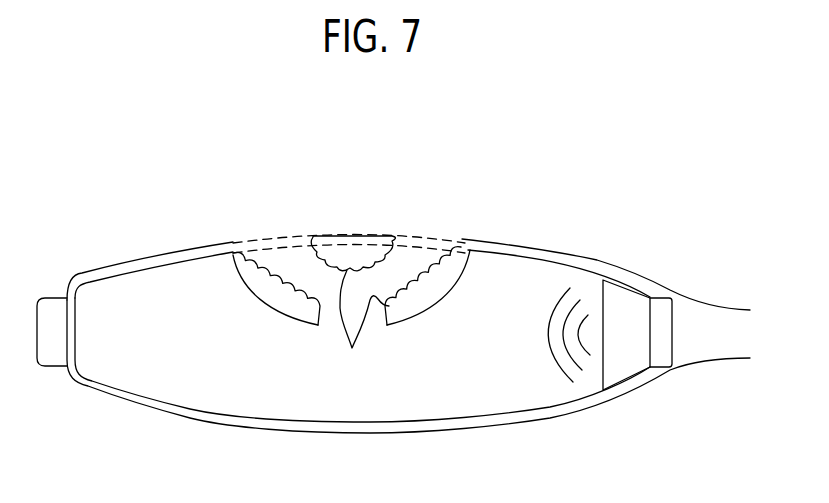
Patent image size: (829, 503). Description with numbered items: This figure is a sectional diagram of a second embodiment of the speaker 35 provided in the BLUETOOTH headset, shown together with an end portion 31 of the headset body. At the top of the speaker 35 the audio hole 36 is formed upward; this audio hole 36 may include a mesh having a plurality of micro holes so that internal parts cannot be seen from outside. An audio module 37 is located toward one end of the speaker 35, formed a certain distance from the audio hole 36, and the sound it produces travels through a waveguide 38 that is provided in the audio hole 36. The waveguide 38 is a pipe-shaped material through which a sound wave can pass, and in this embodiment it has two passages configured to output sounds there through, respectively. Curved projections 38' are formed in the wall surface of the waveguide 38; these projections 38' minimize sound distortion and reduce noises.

The end cap 31 is at (52, 316).
The speaker 35 is at (527, 173).
The audio hole 36 is at (428, 236).
The audio module 37 is at (622, 303).
The waveguide 38 is at (351, 294).
The curved projections 38' is at (363, 323).